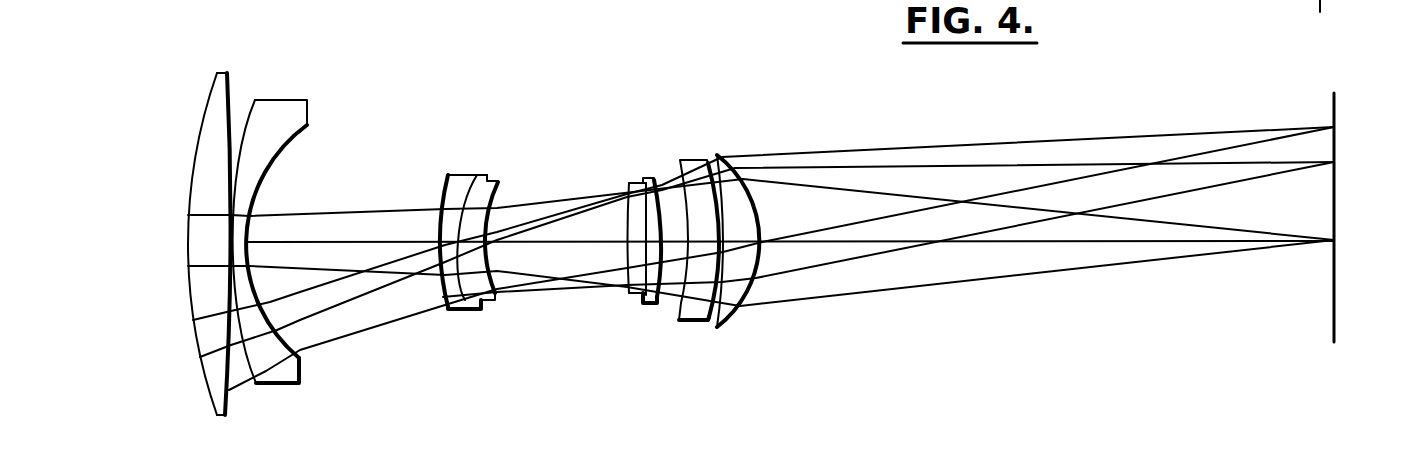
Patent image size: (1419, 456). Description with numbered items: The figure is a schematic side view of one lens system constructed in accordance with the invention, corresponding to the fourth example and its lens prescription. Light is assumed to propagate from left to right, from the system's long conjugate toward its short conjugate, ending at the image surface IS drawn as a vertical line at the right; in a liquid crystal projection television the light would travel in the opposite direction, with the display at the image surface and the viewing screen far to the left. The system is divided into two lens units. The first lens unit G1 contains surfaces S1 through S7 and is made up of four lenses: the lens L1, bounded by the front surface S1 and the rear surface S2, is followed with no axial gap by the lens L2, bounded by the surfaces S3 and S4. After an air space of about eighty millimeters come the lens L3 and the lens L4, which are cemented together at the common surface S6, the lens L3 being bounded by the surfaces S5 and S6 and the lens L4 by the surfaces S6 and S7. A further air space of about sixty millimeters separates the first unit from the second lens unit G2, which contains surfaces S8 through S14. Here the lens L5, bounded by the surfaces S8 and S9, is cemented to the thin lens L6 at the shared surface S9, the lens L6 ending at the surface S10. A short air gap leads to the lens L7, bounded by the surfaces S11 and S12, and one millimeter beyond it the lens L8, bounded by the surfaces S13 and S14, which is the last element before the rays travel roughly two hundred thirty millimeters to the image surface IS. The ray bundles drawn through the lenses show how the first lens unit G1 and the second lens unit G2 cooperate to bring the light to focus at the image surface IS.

The first lens unit G1 is at (531, 62).
The second lens unit G2 is at (594, 62).
The lens L1 is at (203, 119).
The lens L2 is at (308, 101).
The lens L3 is at (462, 172).
The lens L4 is at (498, 178).
The lens L5 is at (632, 190).
The lens L6 is at (648, 177).
The lens L7 is at (692, 160).
The lens L8 is at (737, 193).
The lens surface S1 is at (200, 372).
The lens surface S2 is at (228, 388).
The lens surface S3 is at (246, 369).
The lens surface S4 is at (263, 320).
The lens surface S5 is at (440, 282).
The lens surface S6 is at (463, 300).
The lens surface S7 is at (490, 273).
The lens surface S8 is at (625, 291).
The lens surface S9 is at (643, 293).
The lens surface S10 is at (660, 302).
The lens surface S11 is at (680, 304).
The lens surface S12 is at (709, 320).
The lens surface S13 is at (725, 272).
The lens surface S14 is at (765, 267).
The image surface IS is at (1334, 322).